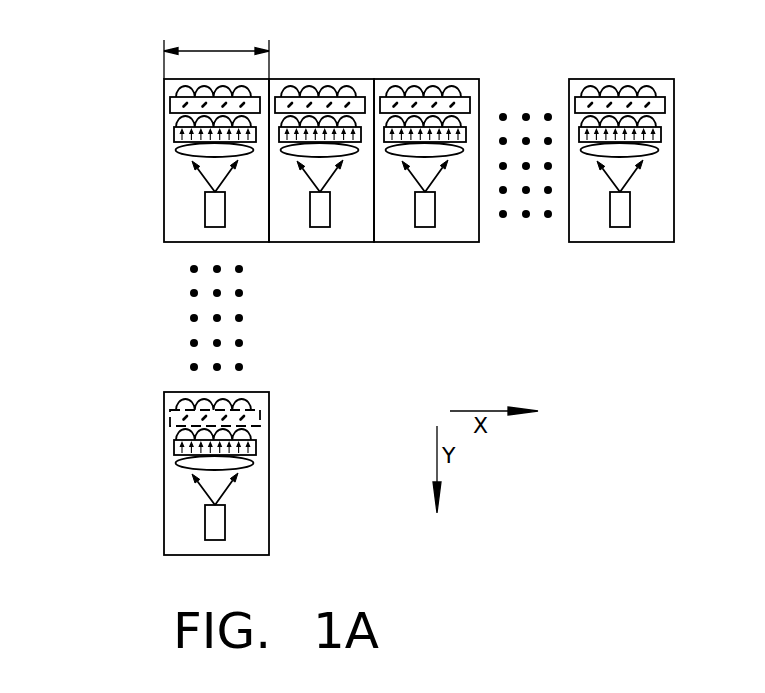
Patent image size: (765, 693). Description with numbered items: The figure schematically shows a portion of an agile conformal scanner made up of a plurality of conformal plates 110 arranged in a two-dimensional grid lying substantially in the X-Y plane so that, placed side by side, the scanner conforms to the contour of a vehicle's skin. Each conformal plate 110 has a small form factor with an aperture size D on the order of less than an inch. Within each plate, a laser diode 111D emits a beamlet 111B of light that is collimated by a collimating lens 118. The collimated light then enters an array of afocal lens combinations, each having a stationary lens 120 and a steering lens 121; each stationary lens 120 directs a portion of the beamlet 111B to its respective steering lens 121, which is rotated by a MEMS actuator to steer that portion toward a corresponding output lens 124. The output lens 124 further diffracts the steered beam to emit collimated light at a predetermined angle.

The conformal plate 110 is at (623, 79).
The beamlet 111B is at (222, 495).
The laser diode 111D is at (212, 226).
The collimating lens 118 is at (177, 152).
The stationary lens 120 is at (178, 120).
The steering lens 121 is at (185, 104).
The output lens 124 is at (178, 90).
The aperture size D is at (215, 50).